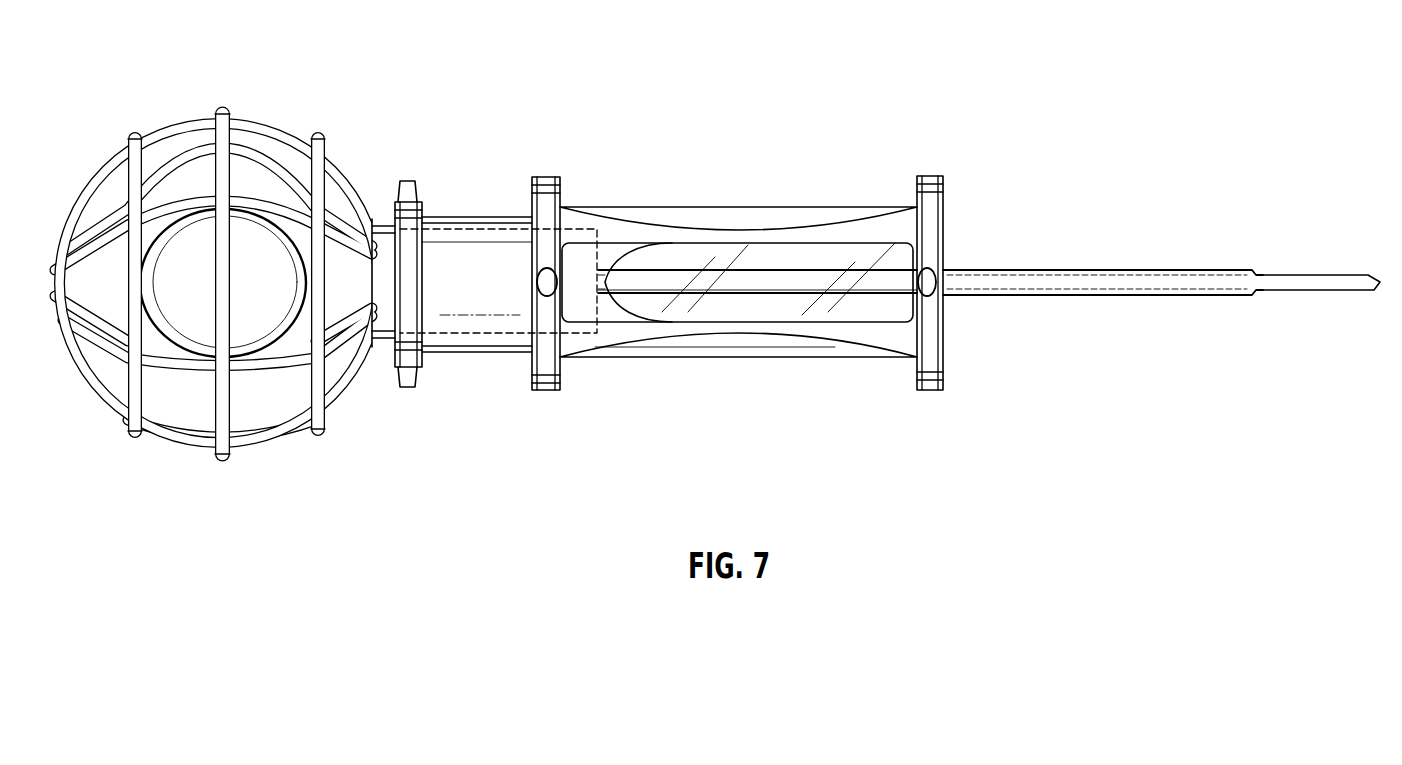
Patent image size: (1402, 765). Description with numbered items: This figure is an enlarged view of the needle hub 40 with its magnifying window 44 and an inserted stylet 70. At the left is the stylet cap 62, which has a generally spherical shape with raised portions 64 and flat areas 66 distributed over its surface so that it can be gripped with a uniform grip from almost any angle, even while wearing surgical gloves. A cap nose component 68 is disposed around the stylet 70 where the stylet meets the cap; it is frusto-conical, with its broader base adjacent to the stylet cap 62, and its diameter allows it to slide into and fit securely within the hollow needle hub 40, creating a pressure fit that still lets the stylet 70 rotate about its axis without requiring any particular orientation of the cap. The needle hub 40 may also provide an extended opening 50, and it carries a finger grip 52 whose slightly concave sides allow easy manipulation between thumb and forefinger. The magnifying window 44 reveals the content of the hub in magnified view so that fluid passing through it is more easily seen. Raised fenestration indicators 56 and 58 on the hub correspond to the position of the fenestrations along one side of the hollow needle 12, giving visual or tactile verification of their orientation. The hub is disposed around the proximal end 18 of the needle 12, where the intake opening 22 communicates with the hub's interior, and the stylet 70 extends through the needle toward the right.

The hollow needle 12 is at (1102, 256).
The proximal end 18 is at (998, 297).
The intake opening 22 is at (943, 268).
The needle hub 40 is at (693, 198).
The magnifying window 44 is at (803, 248).
The extended opening 50 is at (442, 216).
The finger grip 52 is at (812, 338).
The fenestration indicator 56 is at (540, 285).
The fenestration indicator 58 is at (935, 294).
The stylet cap 62 is at (241, 462).
The raised portions 64 is at (277, 420).
The flat areas 66 is at (205, 312).
The cap nose component 68 is at (503, 228).
The stylet 70 is at (1292, 294).